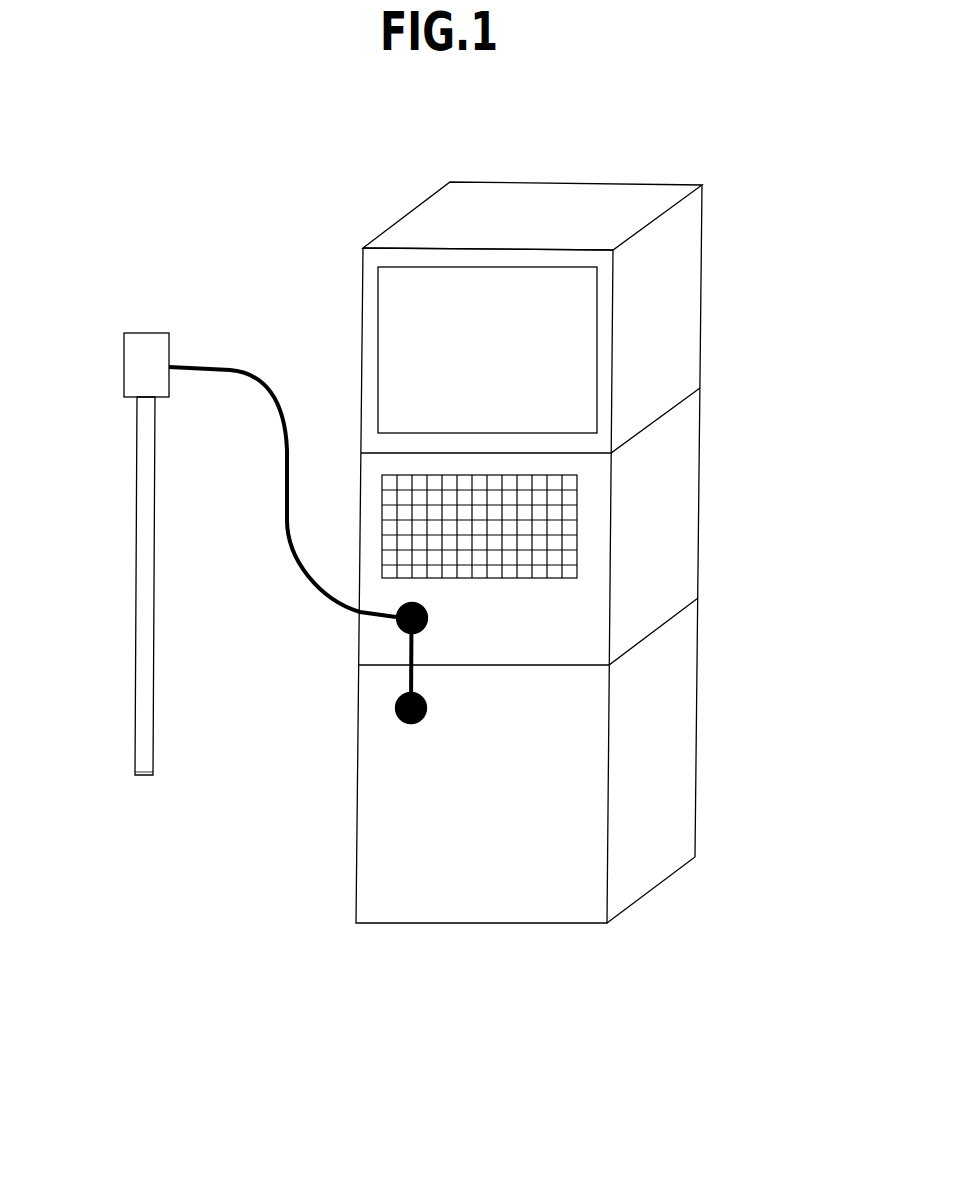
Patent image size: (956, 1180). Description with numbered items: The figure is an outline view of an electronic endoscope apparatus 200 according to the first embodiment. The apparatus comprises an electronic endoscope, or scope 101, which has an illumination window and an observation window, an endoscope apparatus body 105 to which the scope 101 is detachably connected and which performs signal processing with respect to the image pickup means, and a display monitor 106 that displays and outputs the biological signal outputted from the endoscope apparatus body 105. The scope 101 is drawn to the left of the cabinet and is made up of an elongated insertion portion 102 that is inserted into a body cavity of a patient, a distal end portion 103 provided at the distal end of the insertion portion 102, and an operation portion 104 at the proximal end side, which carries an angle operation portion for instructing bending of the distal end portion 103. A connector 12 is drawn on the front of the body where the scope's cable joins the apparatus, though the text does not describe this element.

The electronic endoscope 101 is at (218, 564).
The insertion portion 102 is at (135, 615).
The distal end portion 103 is at (147, 777).
The operation portion 104 is at (146, 333).
The endoscope apparatus body 105 is at (700, 493).
The display monitor 106 is at (700, 277).
The electronic endoscope apparatus 200 is at (545, 552).
The connector / joystick knob 12 is at (408, 648).